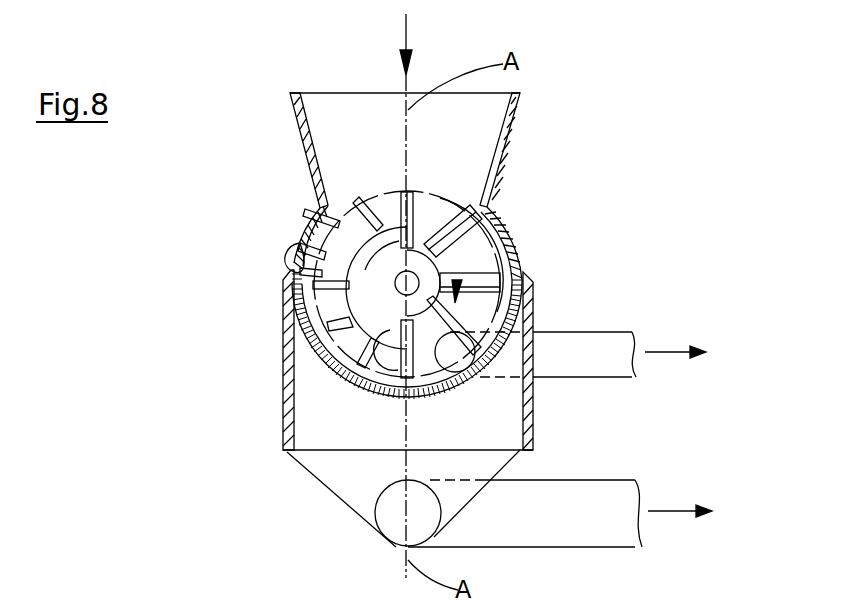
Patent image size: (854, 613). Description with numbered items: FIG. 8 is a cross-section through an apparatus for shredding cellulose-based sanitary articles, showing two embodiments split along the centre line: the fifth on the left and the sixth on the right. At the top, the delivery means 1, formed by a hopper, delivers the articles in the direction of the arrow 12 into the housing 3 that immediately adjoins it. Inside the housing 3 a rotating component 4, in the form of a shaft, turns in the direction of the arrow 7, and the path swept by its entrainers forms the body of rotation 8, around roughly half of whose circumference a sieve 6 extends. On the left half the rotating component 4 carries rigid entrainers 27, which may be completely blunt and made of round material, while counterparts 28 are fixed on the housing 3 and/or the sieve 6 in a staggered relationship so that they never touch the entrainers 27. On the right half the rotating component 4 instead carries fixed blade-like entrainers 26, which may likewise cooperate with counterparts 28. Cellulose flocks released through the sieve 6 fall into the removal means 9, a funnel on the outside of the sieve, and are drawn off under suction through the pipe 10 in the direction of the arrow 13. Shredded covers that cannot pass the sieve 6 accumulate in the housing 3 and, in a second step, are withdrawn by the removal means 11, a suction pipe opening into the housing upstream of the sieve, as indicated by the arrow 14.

The delivery means 1 is at (477, 117).
The housing 3 is at (308, 165).
The rotating component 4 is at (470, 362).
The sieve 6 is at (385, 370).
The arrow 7 is at (440, 262).
The body of rotation 8 is at (345, 355).
The removal means 9 is at (363, 493).
The pipe 10 is at (588, 533).
The removal means 11 is at (606, 338).
The arrow 12 is at (408, 38).
The arrow 13 is at (668, 511).
The arrow 14 is at (690, 356).
The blade-like entrainers 26 is at (463, 223).
The rigid entrainers 27 is at (338, 300).
The counterparts 28 is at (300, 248).